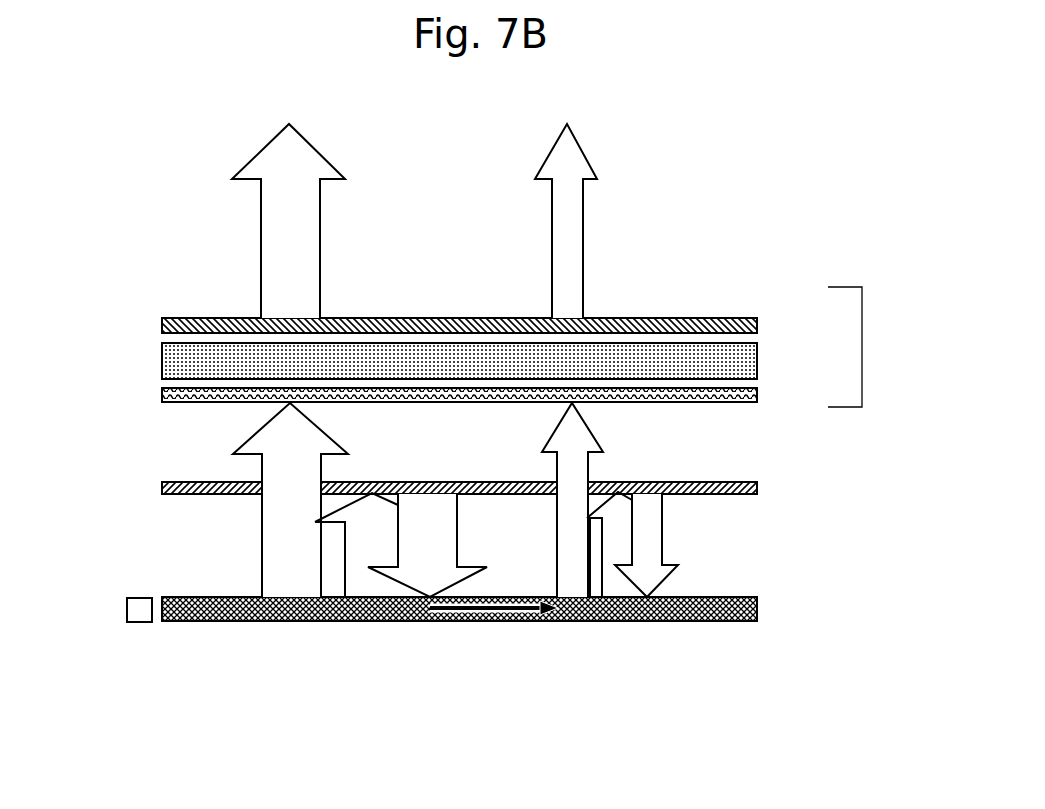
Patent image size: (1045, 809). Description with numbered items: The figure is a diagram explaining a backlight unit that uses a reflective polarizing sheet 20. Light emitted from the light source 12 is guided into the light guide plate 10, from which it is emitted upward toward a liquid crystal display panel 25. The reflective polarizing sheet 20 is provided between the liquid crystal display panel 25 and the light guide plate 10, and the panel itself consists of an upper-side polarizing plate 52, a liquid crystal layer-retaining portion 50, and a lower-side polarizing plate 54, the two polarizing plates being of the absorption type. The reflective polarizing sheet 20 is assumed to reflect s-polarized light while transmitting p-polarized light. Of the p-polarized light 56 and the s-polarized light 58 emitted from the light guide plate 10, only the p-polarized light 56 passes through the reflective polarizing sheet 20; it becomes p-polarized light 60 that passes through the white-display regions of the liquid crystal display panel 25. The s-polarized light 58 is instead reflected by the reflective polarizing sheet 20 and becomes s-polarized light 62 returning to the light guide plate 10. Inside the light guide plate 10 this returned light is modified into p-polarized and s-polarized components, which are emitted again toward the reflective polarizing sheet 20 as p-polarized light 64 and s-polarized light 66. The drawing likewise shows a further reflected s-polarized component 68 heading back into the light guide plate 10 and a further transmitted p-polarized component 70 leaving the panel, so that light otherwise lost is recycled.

The light guide plate 10 is at (757, 602).
The light source 12 is at (127, 610).
The reflective polarizing sheet 20 is at (757, 485).
The liquid crystal display panel 25 is at (878, 347).
The liquid crystal layer-retaining portion 50 is at (757, 368).
The upper-side polarizing plate 52 is at (757, 326).
The lower-side polarizing plate 54 is at (757, 391).
The p-polarized light 56 is at (292, 570).
The s-polarized light 58 is at (363, 578).
The p-polarized light 60 is at (298, 220).
The s-polarized light 62 is at (423, 577).
The p-polarized light 64 is at (568, 573).
The s-polarized light 66 is at (615, 583).
The reflected S-polarized light 68 is at (643, 572).
The emitted P-polarized light 70 is at (570, 207).